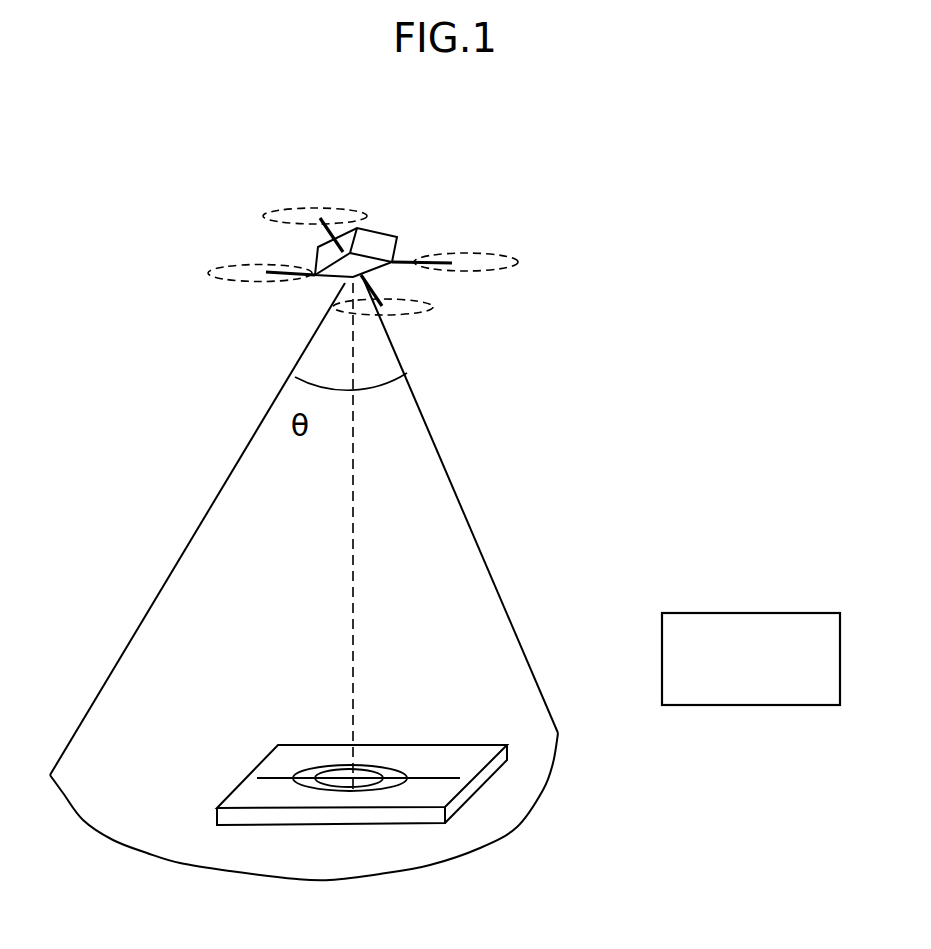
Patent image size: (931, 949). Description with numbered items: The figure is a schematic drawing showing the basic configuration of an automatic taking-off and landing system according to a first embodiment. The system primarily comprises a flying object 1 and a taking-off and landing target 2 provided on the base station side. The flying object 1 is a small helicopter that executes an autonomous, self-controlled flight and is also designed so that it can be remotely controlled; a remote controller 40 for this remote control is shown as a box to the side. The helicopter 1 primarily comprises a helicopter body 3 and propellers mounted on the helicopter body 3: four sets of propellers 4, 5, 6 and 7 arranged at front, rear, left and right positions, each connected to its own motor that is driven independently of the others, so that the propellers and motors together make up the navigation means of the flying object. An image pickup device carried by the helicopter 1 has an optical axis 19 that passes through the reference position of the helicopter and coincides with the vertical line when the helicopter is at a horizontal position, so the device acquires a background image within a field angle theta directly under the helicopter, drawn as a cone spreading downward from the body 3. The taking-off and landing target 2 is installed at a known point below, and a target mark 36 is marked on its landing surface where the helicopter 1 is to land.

The flying object 1 is at (391, 233).
The taking-off and landing target 2 is at (457, 743).
The helicopter body 3 is at (399, 243).
The propeller 4 is at (293, 208).
The propeller 5 is at (483, 253).
The propeller 6 is at (217, 281).
The propeller 7 is at (430, 306).
The optical axis 19 is at (355, 497).
The target mark 36 is at (328, 798).
The remote controller 40 is at (743, 613).